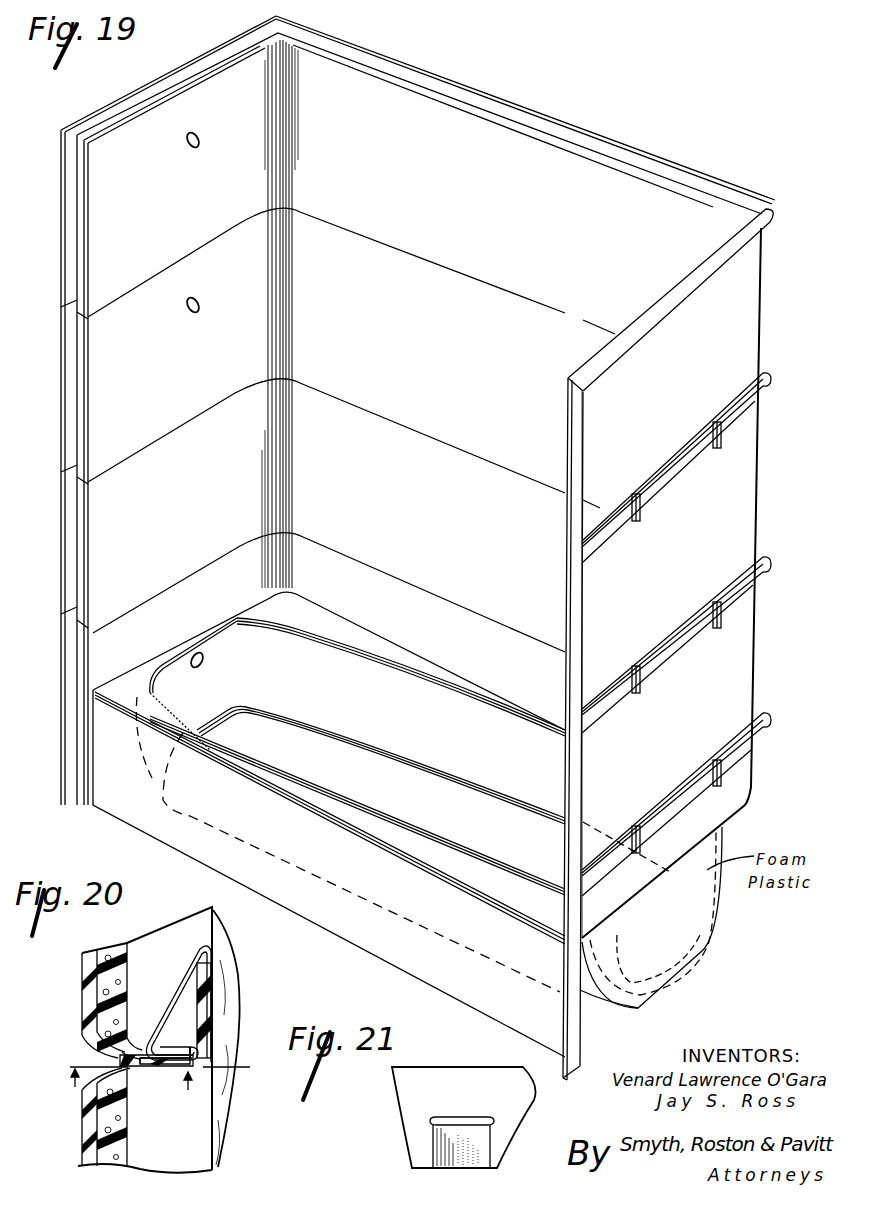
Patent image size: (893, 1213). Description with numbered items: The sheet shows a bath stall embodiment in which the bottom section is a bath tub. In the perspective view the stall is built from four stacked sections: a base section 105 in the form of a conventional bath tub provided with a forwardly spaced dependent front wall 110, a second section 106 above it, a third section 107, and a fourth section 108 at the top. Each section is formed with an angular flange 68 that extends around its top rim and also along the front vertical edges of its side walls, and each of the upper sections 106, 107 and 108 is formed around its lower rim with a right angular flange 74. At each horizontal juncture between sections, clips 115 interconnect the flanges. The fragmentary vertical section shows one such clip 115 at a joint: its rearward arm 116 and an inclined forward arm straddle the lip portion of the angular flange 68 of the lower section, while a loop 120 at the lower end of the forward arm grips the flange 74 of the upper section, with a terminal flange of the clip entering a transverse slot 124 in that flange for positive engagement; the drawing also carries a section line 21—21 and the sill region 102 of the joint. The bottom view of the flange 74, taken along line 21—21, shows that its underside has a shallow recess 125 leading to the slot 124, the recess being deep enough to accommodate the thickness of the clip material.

In FIG. 19, the angular flange 68 is at (657, 322).
In FIG. 20, the right angular flange 74 is at (187, 1058).
In FIG. 21, the right angular flange 74 is at (418, 1095).
In FIG. 20, the tile sill 102 is at (174, 1068).
In FIG. 19, the base section 105 is at (108, 742).
In FIG. 19, the second section 106 is at (56, 573).
In FIG. 19, the third section 107 is at (56, 408).
In FIG. 19, the fourth section 108 is at (56, 250).
In FIG. 19, the front wall 110 is at (387, 889).
In FIG. 19, the clip 115 is at (715, 449).
In FIG. 20, the clip 115 is at (212, 971).
In FIG. 20, the rearward arm 116 is at (214, 1004).
In FIG. 20, the loop 120 is at (196, 1052).
In FIG. 20, the transverse slot 124 is at (128, 1049).
In FIG. 21, the transverse slot 124 is at (456, 1118).
In FIG. 21, the shallow recess 125 is at (473, 1150).
In FIG. 20, the section line 21 is at (155, 1075).